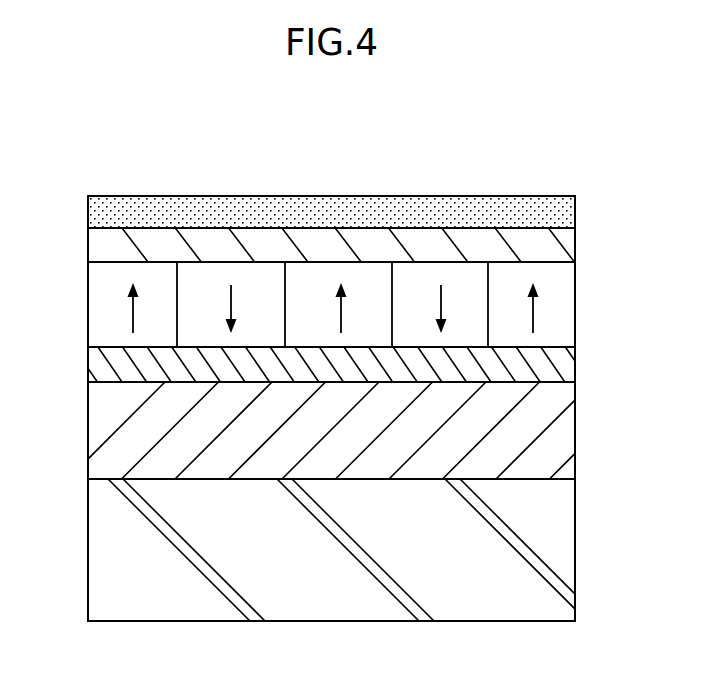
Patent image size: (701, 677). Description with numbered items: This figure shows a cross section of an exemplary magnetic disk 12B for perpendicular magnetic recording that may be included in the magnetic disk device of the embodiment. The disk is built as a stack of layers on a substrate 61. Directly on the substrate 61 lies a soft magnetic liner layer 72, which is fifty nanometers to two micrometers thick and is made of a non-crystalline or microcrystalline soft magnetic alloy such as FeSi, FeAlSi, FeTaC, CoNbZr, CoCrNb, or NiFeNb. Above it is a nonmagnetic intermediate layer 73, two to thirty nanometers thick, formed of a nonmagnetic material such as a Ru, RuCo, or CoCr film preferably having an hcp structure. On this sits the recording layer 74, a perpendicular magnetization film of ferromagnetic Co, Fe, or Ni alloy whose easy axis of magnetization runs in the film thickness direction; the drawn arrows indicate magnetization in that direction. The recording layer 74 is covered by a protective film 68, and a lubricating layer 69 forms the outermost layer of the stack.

The magnetic disk 12B is at (72, 142).
The lubricating layer 69 is at (575, 208).
The protective film 68 is at (575, 242).
The recording layer 74 is at (575, 310).
The nonmagnetic intermediate layer 73 is at (575, 360).
The soft magnetic liner layer 72 is at (575, 427).
The substrate 61 is at (575, 537).